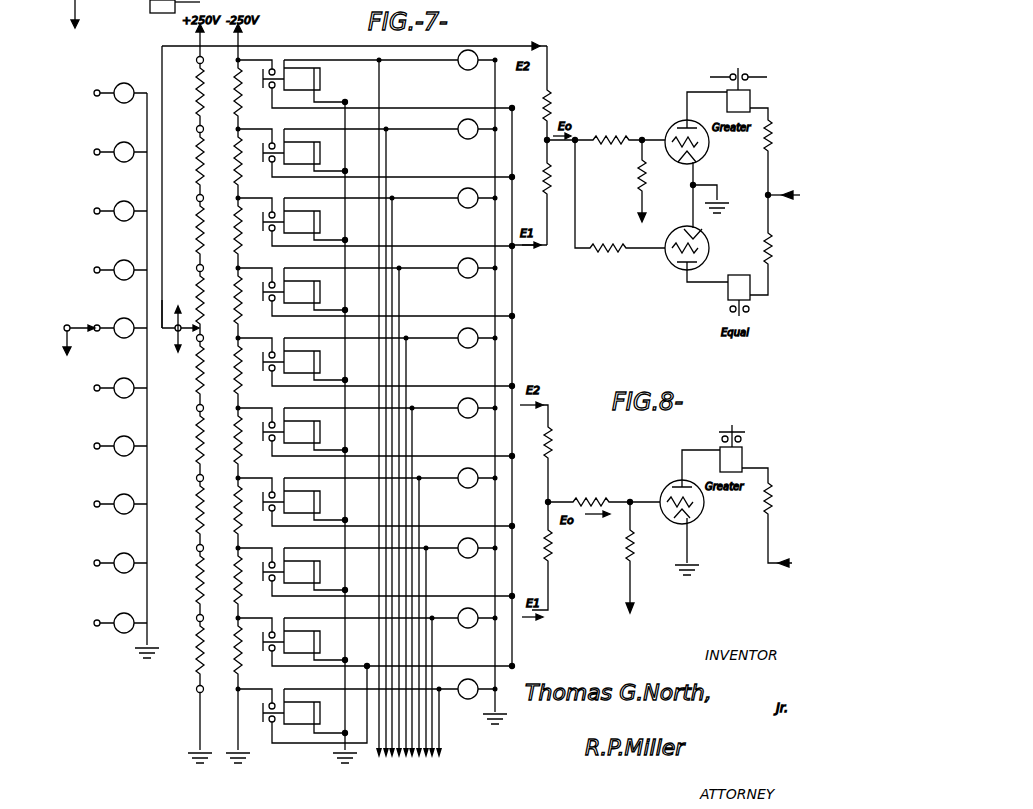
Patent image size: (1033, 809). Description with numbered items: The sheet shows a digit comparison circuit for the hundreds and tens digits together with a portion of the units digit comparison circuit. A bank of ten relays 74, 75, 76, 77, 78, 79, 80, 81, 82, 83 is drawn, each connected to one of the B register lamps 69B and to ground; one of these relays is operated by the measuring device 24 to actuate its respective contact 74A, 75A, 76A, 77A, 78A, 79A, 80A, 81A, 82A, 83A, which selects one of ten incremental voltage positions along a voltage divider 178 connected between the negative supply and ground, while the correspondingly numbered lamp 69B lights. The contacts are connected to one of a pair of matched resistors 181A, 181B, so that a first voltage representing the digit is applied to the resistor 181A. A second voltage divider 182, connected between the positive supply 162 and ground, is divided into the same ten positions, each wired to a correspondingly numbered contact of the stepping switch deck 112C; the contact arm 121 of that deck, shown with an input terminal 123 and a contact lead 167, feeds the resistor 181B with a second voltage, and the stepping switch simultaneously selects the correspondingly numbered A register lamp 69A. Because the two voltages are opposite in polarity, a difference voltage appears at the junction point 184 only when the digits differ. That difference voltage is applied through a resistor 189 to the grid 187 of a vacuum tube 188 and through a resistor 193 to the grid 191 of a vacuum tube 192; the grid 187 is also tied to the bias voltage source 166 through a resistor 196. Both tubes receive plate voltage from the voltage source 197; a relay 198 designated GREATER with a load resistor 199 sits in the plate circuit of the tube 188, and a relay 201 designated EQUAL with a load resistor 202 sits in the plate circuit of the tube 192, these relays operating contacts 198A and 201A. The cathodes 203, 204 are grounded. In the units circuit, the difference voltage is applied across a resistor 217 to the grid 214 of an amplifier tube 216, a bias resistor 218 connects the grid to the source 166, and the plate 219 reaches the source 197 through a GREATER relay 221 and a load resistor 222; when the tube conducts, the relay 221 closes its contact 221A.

In FIG. 7, the relay contacts / signal input 167 is at (150, 7).
In FIG. 7, the +250-volt supply 162 is at (192, 31).
In FIG. 7, the voltage divider 182 is at (198, 55).
In FIG. 7, the voltage divider 178 is at (250, 52).
In FIG. 7, the contact 83A is at (266, 64).
In FIG. 7, the relay 83 is at (320, 78).
In FIG. 7, the contact 82A is at (263, 148).
In FIG. 7, the relay 82 is at (320, 152).
In FIG. 7, the contact 81A is at (263, 217).
In FIG. 7, the relay 81 is at (318, 224).
In FIG. 7, the contact 80A is at (263, 287).
In FIG. 7, the relay 80 is at (318, 294).
In FIG. 7, the contact 79A is at (263, 357).
In FIG. 7, the relay 79 is at (310, 357).
In FIG. 7, the contact 78A is at (263, 427).
In FIG. 7, the relay 78 is at (310, 434).
In FIG. 7, the contact 77A is at (263, 497).
In FIG. 7, the relay 77 is at (310, 504).
In FIG. 7, the contact 76A is at (263, 567).
In FIG. 7, the relay 76 is at (310, 574).
In FIG. 7, the contact 75A is at (263, 637).
In FIG. 7, the relay 75 is at (310, 644).
In FIG. 7, the contact 74A is at (263, 726).
In FIG. 7, the relay 74 is at (310, 722).
In FIG. 7, the A register lamps 69A is at (116, 101).
In FIG. 7, the B register lamps 69B is at (459, 67).
In FIG. 7, the measuring device 24 is at (408, 430).
In FIG. 7, the contact arm 121 is at (78, 322).
In FIG. 7, the input terminal 123 is at (62, 328).
In FIG. 7, the stepping switch deck 112C is at (164, 334).
In FIG. 7, the matched resistor 181B is at (555, 99).
In FIG. 7, the matched resistor 181A is at (551, 205).
In FIG. 7, the junction point 184 is at (546, 143).
In FIG. 7, the resistor 189 is at (598, 134).
In FIG. 7, the grid 187 is at (666, 134).
In FIG. 7, the vacuum tube 188 is at (712, 141).
In FIG. 7, the resistor 196 is at (637, 175).
In FIG. 7, the bias voltage source 166 is at (638, 202).
In FIG. 8, the bias voltage source 166 is at (630, 588).
In FIG. 7, the cathode 203 is at (697, 157).
In FIG. 7, the cathode 204 is at (690, 189).
In FIG. 7, the vacuum tube 192 is at (703, 234).
In FIG. 7, the grid 191 is at (670, 259).
In FIG. 7, the resistor 193 is at (604, 255).
In FIG. 7, the relay 198 is at (752, 94).
In FIG. 7, the contacts 198A is at (740, 68).
In FIG. 7, the load resistor 199 is at (772, 140).
In FIG. 7, the voltage source 197 is at (781, 194).
In FIG. 8, the voltage source 197 is at (786, 563).
In FIG. 7, the load resistor 202 is at (766, 253).
In FIG. 7, the relay 201 is at (726, 297).
In FIG. 7, the contacts 201A is at (734, 314).
In FIG. 8, the resistor 217 is at (582, 494).
In FIG. 8, the bias resistor 218 is at (628, 556).
In FIG. 8, the grid 214 is at (661, 496).
In FIG. 8, the plate 219 is at (674, 480).
In FIG. 8, the amplifier tube 216 is at (673, 521).
In FIG. 8, the GREATER relay 221 is at (745, 456).
In FIG. 8, the contact 221A is at (734, 429).
In FIG. 8, the load resistor 222 is at (774, 504).